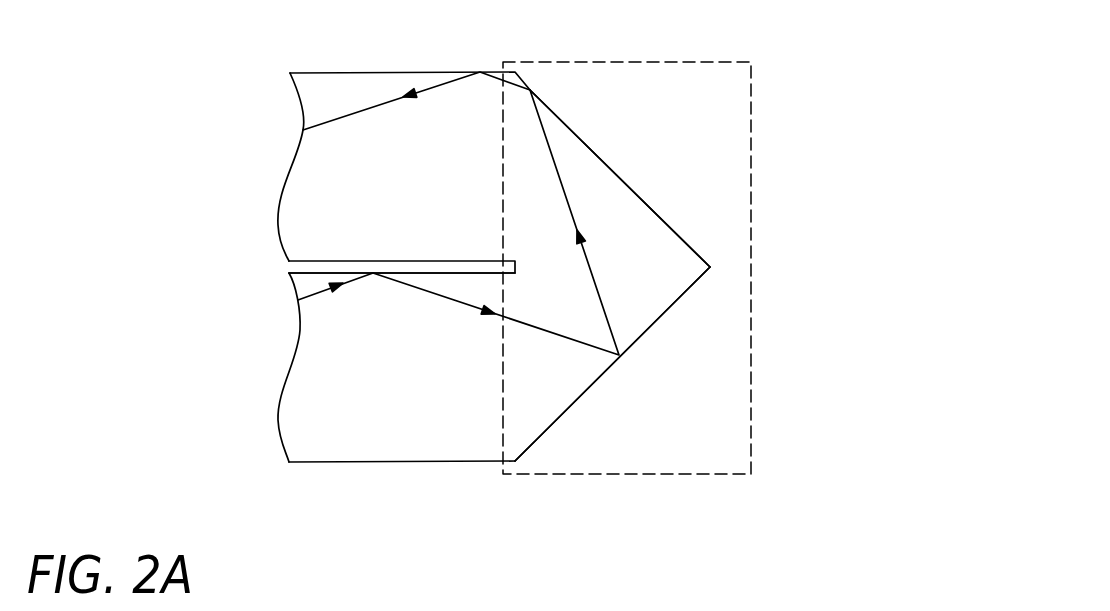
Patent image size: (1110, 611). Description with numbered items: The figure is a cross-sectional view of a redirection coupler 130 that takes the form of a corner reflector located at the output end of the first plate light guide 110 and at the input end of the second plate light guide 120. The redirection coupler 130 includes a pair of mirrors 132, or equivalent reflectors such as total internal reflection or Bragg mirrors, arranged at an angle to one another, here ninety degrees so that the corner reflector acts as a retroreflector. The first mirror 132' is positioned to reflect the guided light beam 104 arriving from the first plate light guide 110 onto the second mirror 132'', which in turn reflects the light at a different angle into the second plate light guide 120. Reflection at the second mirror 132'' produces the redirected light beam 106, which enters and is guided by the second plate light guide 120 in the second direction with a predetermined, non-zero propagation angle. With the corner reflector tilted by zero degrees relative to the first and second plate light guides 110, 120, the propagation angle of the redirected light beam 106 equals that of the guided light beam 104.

The guided light beam 104 is at (326, 295).
The redirected light beam 106 is at (325, 133).
The first plate light guide 110 is at (427, 387).
The second plate light guide 120 is at (427, 185).
The redirection coupler 130 is at (678, 48).
The pair of mirrors 132 is at (676, 275).
The first mirror 132' is at (626, 364).
The second mirror 132'' is at (636, 178).